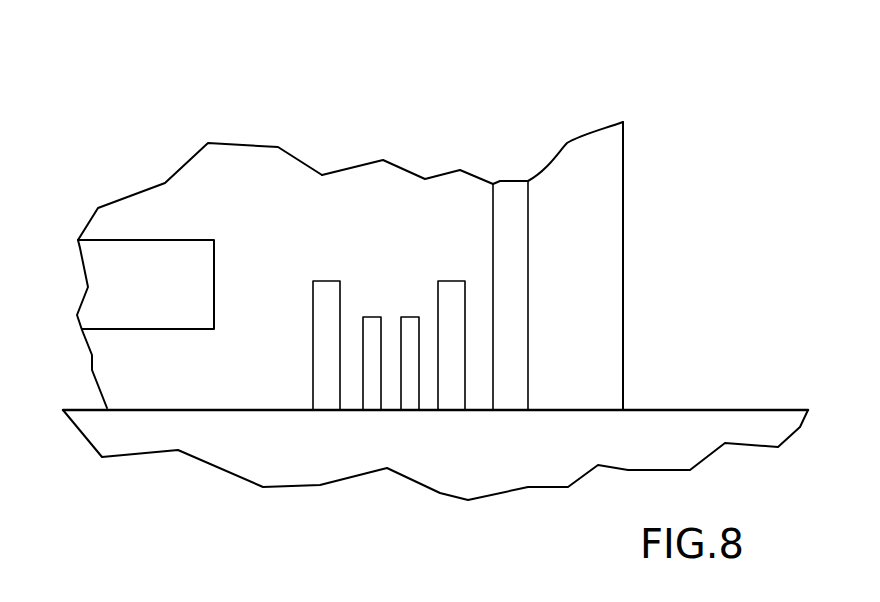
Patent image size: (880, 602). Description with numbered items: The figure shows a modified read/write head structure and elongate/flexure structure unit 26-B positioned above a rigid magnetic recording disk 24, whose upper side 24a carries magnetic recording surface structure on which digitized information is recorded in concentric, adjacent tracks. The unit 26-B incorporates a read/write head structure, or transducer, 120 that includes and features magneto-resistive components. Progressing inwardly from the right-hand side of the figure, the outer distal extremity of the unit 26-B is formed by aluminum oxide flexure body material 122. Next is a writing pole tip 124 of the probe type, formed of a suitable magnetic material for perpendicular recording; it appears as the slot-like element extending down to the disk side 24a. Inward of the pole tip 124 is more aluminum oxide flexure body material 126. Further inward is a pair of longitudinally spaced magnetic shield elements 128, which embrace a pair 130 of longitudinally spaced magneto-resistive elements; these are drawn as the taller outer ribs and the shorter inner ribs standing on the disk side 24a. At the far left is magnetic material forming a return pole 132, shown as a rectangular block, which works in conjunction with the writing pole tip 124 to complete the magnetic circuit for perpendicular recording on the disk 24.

The read/write head structure and elongate/flexure structure unit 26-B is at (331, 137).
The read/write head structure 120 is at (575, 113).
The aluminum oxide flexure body material 122 is at (604, 181).
The writing pole tip 124 is at (508, 325).
The aluminum oxide flexure body material 126 is at (406, 188).
The magnetic shield elements 128 is at (449, 404).
The magneto-resistive elements 130 is at (413, 316).
The return pole 132 is at (117, 253).
The magnetic recording disk 24 is at (452, 413).
The disk side 24a is at (692, 410).